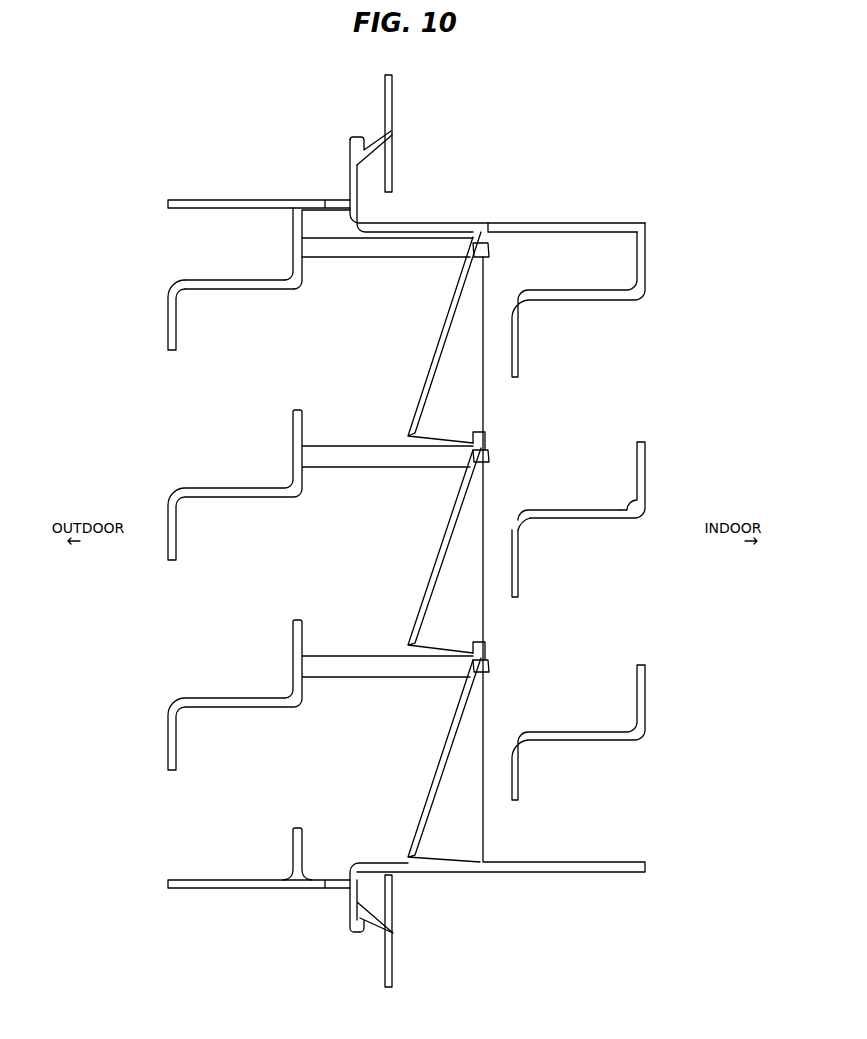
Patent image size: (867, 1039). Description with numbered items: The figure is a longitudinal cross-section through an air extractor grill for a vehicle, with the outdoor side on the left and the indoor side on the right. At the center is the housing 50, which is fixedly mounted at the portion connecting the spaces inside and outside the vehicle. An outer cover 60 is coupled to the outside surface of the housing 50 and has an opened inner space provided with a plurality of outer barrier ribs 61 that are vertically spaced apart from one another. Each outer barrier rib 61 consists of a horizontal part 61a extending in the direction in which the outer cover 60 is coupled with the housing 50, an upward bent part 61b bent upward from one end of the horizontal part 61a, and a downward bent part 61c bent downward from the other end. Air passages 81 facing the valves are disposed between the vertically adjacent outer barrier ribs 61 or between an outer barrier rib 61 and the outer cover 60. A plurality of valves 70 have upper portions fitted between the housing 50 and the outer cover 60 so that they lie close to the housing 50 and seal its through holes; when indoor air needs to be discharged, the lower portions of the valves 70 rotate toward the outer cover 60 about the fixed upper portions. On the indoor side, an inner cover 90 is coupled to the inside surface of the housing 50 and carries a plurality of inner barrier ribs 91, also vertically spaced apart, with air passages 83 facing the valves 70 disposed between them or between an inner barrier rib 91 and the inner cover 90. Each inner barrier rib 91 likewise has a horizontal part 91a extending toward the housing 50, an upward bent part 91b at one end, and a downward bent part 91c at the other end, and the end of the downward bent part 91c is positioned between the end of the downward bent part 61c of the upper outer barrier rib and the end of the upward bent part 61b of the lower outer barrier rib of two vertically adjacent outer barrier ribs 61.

The housing 50 is at (452, 872).
The outer cover 60 is at (228, 888).
The outer barrier rib 61 is at (269, 438).
The horizontal part 61a is at (238, 282).
The upward bent part 61b is at (298, 235).
The downward bent part 61c is at (176, 321).
The valve 70 is at (432, 350).
The air passage 81 is at (225, 385).
The air passage 83 is at (598, 387).
The inner cover 90 is at (570, 222).
The inner barrier rib 91 is at (632, 511).
The horizontal part 91a is at (593, 515).
The upward bent part 91b is at (655, 471).
The downward bent part 91c is at (515, 566).